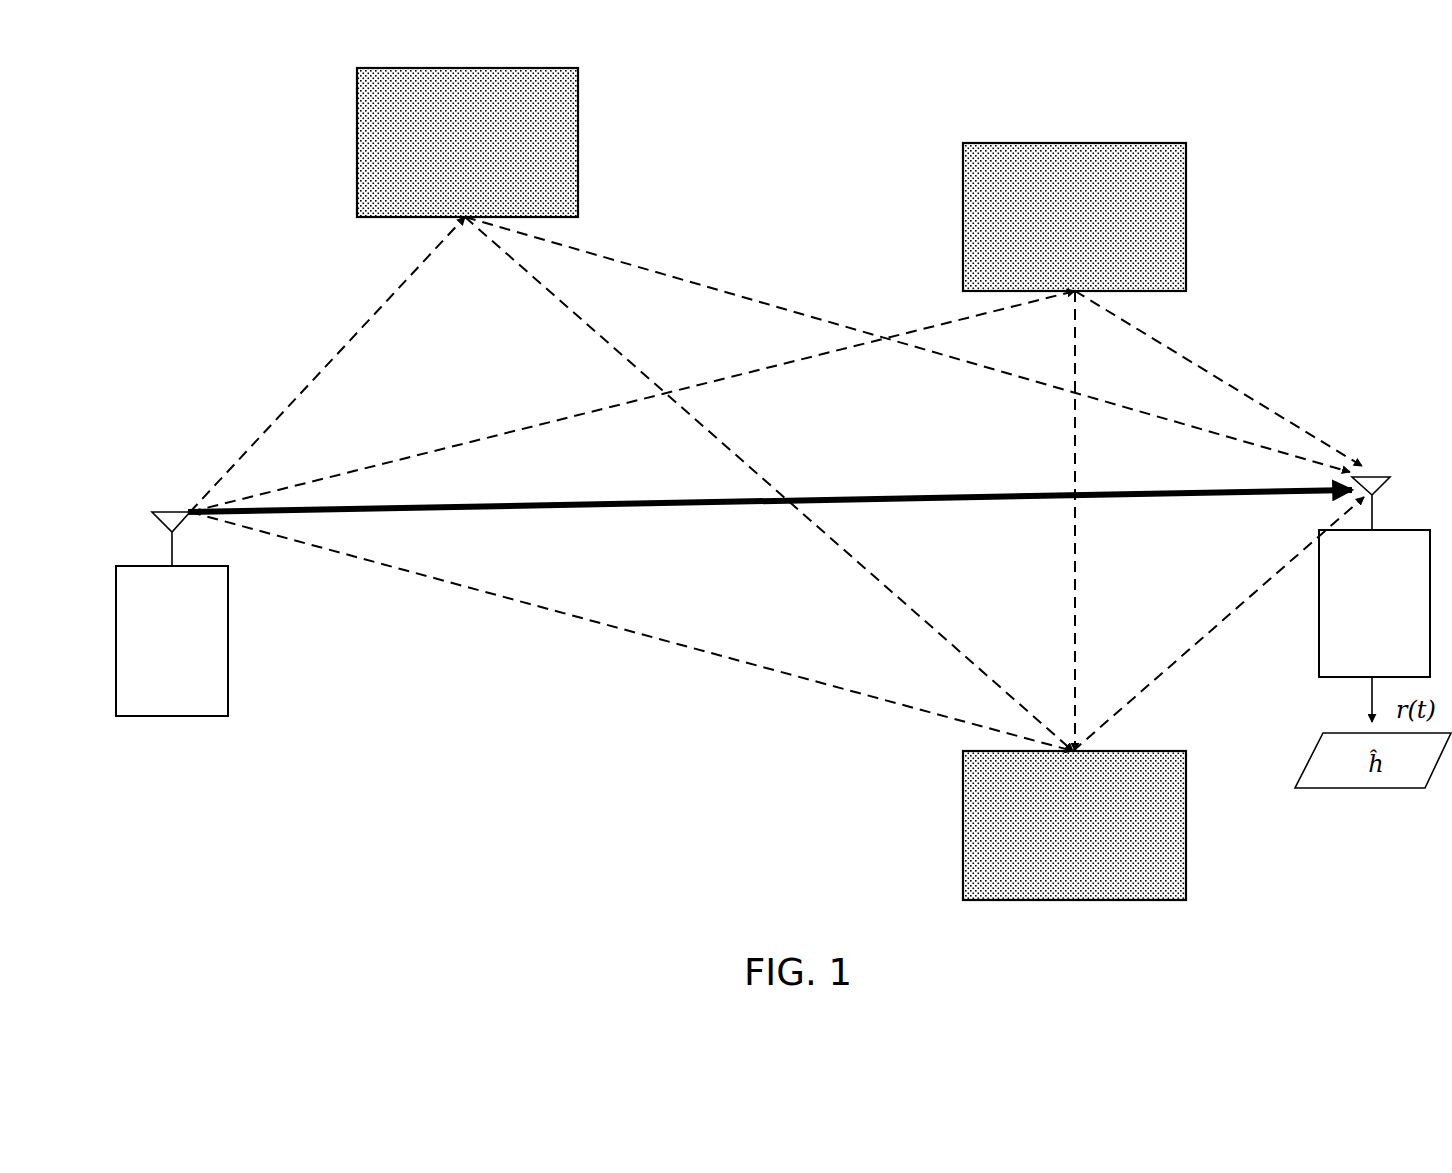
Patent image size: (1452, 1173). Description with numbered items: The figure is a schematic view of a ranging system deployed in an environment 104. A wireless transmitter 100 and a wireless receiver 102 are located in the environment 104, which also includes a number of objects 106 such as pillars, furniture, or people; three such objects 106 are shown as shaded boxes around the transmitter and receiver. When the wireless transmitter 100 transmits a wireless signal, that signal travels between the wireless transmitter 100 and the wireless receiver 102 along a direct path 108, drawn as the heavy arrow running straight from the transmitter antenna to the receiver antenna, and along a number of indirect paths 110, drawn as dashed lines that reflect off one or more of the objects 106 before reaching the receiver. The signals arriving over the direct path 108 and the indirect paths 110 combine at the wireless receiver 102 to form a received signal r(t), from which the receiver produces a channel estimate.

The wireless transmitter 100 is at (172, 716).
The wireless receiver 102 is at (1318, 612).
The environment 104 is at (390, 808).
The objects 106 is at (578, 143).
The direct path 108 is at (708, 507).
The indirect paths 110 is at (383, 305).